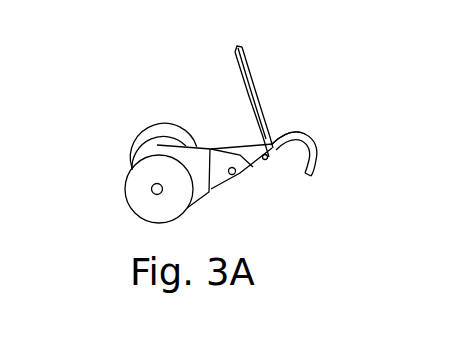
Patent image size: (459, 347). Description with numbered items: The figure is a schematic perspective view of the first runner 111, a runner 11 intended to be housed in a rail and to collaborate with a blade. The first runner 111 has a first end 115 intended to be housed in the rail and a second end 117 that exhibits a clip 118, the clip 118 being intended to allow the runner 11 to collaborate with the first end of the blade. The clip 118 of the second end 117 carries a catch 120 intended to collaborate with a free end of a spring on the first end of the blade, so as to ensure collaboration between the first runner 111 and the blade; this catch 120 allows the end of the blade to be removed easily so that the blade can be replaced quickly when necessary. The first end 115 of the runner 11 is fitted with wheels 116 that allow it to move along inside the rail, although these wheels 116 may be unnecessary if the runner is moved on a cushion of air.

The runner 11 is at (205, 80).
The first runner 111 is at (366, 97).
The first end 115 is at (158, 145).
The wheels 116 is at (164, 125).
The second end 117 is at (255, 162).
The clip 118 is at (317, 153).
The catch 120 is at (282, 132).